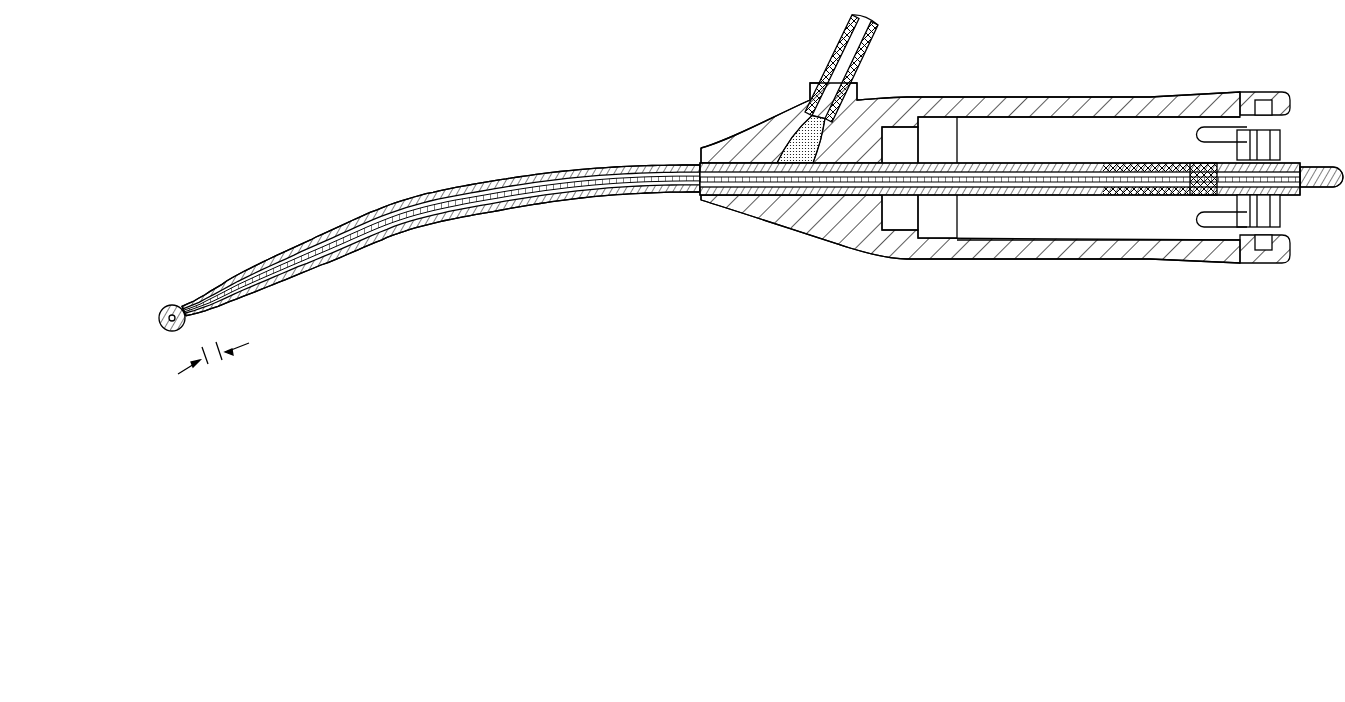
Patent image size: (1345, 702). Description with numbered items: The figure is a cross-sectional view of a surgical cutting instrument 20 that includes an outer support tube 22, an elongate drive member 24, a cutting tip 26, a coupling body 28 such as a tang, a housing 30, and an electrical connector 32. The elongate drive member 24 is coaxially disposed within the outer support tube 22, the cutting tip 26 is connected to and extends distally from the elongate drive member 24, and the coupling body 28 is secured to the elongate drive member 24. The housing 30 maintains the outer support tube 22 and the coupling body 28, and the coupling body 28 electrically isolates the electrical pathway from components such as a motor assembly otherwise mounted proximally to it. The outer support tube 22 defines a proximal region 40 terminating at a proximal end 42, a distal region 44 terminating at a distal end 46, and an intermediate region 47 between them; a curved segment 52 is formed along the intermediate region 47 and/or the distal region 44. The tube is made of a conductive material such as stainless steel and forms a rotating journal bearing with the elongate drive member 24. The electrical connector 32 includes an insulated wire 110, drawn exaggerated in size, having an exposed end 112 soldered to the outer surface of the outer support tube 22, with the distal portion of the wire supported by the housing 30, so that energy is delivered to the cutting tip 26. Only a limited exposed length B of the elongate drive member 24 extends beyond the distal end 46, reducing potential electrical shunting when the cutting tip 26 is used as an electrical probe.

The surgical cutting instrument 20 is at (432, 103).
The outer support tube 22 is at (716, 231).
The elongate drive member 24 is at (441, 230).
The cutting tip 26 is at (137, 310).
The coupling body 28 is at (1243, 150).
The housing 30 is at (983, 94).
The electrical connector 32 is at (843, 84).
The proximal region 40 is at (1047, 160).
The proximal end 42 is at (1193, 193).
The distal region 44 is at (326, 275).
The distal end 46 is at (158, 331).
The intermediate region 47 is at (535, 205).
The curved segment 52 is at (326, 234).
The insulated wire 110 is at (833, 58).
The exposed end 112 is at (802, 135).
The exposed length B is at (217, 360).